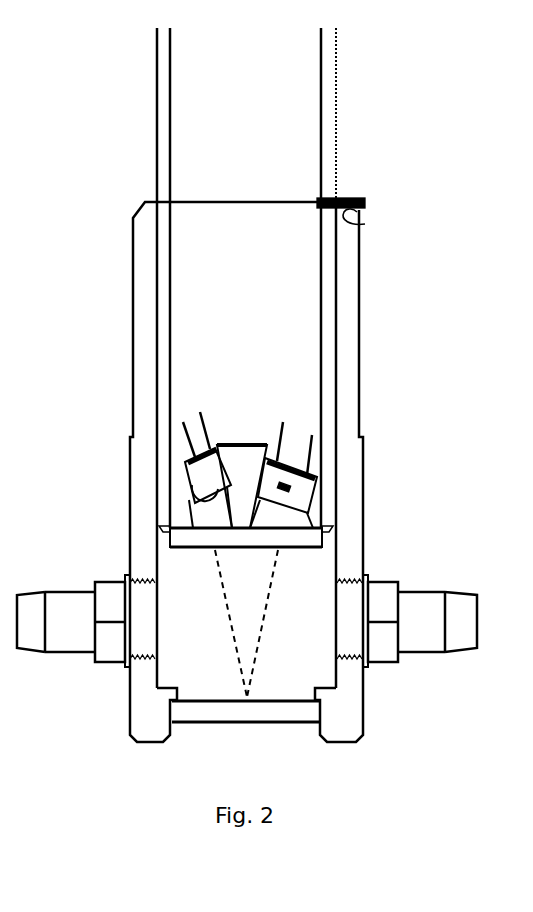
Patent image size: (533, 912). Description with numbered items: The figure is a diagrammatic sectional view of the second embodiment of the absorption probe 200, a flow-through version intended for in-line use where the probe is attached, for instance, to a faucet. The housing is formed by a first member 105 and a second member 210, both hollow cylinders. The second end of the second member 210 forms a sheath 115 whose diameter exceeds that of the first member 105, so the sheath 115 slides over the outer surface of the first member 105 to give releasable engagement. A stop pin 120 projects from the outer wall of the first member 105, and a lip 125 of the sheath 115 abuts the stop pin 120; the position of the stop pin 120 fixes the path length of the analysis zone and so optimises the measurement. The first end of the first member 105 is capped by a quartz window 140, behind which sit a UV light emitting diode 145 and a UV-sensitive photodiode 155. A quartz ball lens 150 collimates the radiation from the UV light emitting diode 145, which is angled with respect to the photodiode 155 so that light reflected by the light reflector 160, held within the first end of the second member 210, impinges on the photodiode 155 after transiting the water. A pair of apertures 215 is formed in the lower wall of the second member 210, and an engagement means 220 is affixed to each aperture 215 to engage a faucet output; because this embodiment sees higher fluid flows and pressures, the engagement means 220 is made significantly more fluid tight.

The first member 105 is at (329, 82).
The sheath 115 is at (354, 293).
The stop pin 120 is at (363, 199).
The lip 125 is at (365, 224).
The quartz window 140 is at (319, 534).
The UV light emitting diode 145 is at (189, 452).
The quartz ball lens 150 is at (190, 487).
The UV-sensitive photodiode 155 is at (322, 470).
The light reflector 160 is at (290, 727).
The absorption probe 200 is at (130, 795).
The second member 210 is at (354, 558).
The apertures 215 is at (150, 629).
The engagement means 220 is at (424, 636).